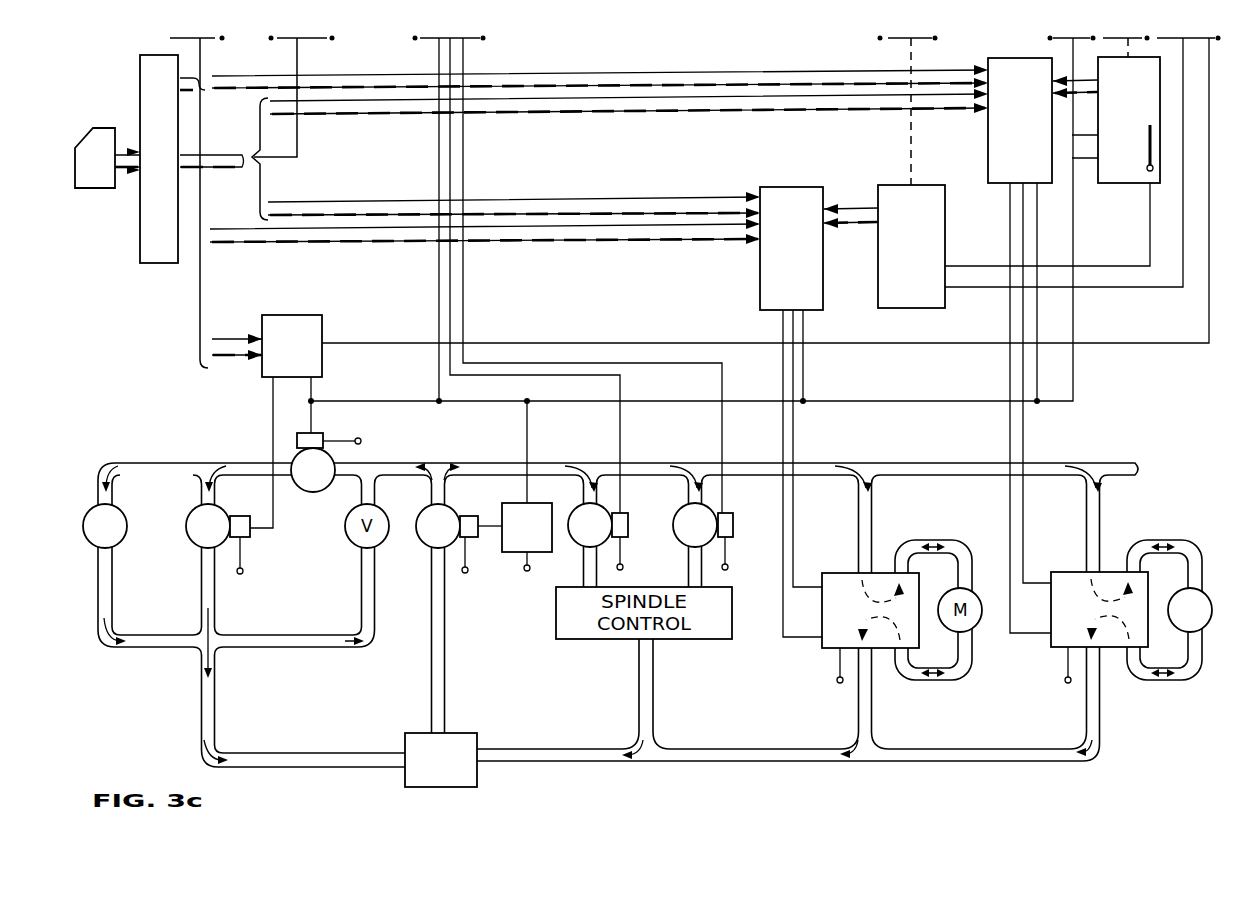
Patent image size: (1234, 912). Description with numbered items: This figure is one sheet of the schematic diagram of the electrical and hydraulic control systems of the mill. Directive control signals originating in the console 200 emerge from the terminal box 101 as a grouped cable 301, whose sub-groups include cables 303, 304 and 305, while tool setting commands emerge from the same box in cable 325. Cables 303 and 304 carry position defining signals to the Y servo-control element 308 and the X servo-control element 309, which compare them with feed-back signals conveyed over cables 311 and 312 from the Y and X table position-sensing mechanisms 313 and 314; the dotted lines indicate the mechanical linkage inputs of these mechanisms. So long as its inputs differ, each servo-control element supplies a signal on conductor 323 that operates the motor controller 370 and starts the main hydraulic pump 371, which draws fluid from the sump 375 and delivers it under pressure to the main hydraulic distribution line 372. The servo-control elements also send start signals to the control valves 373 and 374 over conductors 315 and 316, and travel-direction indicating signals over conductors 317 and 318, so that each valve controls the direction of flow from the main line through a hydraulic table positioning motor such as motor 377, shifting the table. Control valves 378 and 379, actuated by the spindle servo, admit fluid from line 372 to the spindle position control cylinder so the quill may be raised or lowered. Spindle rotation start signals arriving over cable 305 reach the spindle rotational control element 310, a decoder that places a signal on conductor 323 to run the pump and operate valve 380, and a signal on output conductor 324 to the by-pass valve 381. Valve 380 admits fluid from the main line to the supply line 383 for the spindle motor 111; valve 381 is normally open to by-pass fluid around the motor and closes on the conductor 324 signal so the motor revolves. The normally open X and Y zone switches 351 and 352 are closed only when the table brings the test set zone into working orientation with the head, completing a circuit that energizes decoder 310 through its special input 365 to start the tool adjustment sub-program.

The terminal box 101 is at (153, 218).
The spindle motor 111 is at (127, 537).
The console 200 is at (108, 170).
The cable 301 is at (185, 77).
The cable 303 is at (702, 75).
The cable 304 is at (412, 238).
The cable 305 is at (222, 338).
The Y servo-control element 308 is at (1032, 131).
The X servo-control element 309 is at (807, 261).
The spindle rotational control element 310 is at (302, 355).
The cable 311 is at (1083, 82).
The cable 312 is at (872, 218).
The Y table position-sensing mechanism 313 is at (1138, 94).
The X table position-sensing mechanism 314 is at (923, 233).
The conductor 315 is at (783, 372).
The conductor 316 is at (1012, 430).
The conductor 317 is at (793, 438).
The conductor 318 is at (1025, 437).
The conductor 323 is at (440, 323).
The output conductor 324 is at (273, 420).
The cable 325 is at (234, 168).
The X zone switch 351 is at (897, 270).
The Y zone switch 352 is at (1143, 158).
The special input 365 is at (407, 343).
The motor controller 370 is at (527, 541).
The main hydraulic pump 371 is at (445, 504).
The main hydraulic distribution line 372 is at (453, 462).
The control valve 373 is at (852, 620).
The control valve 374 is at (1077, 620).
The sump 375 is at (441, 760).
The hydraulic table positioning motor 377 is at (1175, 627).
The control valve 378 is at (581, 503).
The control valve 379 is at (677, 534).
The valve 380 is at (320, 432).
The by-pass valve 381 is at (220, 507).
The supply line 383 is at (195, 462).